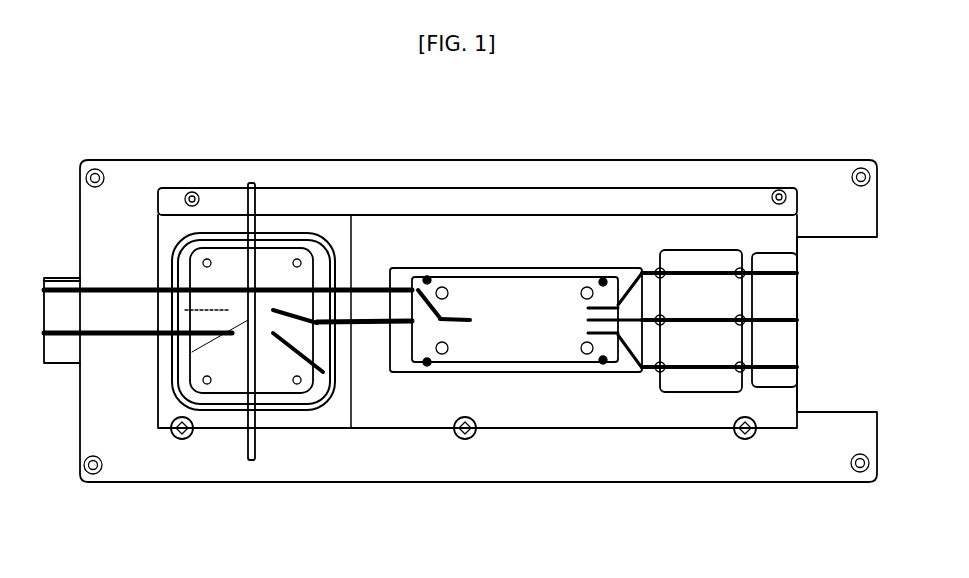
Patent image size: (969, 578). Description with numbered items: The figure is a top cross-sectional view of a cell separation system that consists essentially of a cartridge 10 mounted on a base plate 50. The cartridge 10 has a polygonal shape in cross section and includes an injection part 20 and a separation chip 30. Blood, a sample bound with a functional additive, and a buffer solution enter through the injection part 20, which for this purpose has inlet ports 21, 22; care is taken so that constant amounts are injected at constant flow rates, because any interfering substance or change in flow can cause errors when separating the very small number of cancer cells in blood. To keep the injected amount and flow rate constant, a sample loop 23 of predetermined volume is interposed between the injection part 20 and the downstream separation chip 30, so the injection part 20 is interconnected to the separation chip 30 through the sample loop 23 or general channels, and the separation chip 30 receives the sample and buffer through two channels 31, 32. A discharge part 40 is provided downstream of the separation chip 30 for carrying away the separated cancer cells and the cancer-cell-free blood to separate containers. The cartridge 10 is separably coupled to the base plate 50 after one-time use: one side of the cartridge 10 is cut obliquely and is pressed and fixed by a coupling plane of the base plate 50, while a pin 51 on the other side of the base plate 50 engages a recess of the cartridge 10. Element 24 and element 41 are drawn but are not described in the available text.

The cartridge 10 is at (612, 242).
The injection part 20 is at (213, 238).
The inlet port 21 is at (255, 438).
The inlet port 22 is at (256, 183).
The sample loop 23 is at (293, 232).
The inner seat plate 24 is at (168, 367).
The separation chip 30 is at (530, 297).
The channel 31 is at (472, 313).
The channel 32 is at (432, 298).
The discharge part 40 is at (703, 260).
The fixing hole 41 is at (792, 185).
The base plate 50 is at (817, 428).
The pin 51 is at (182, 440).